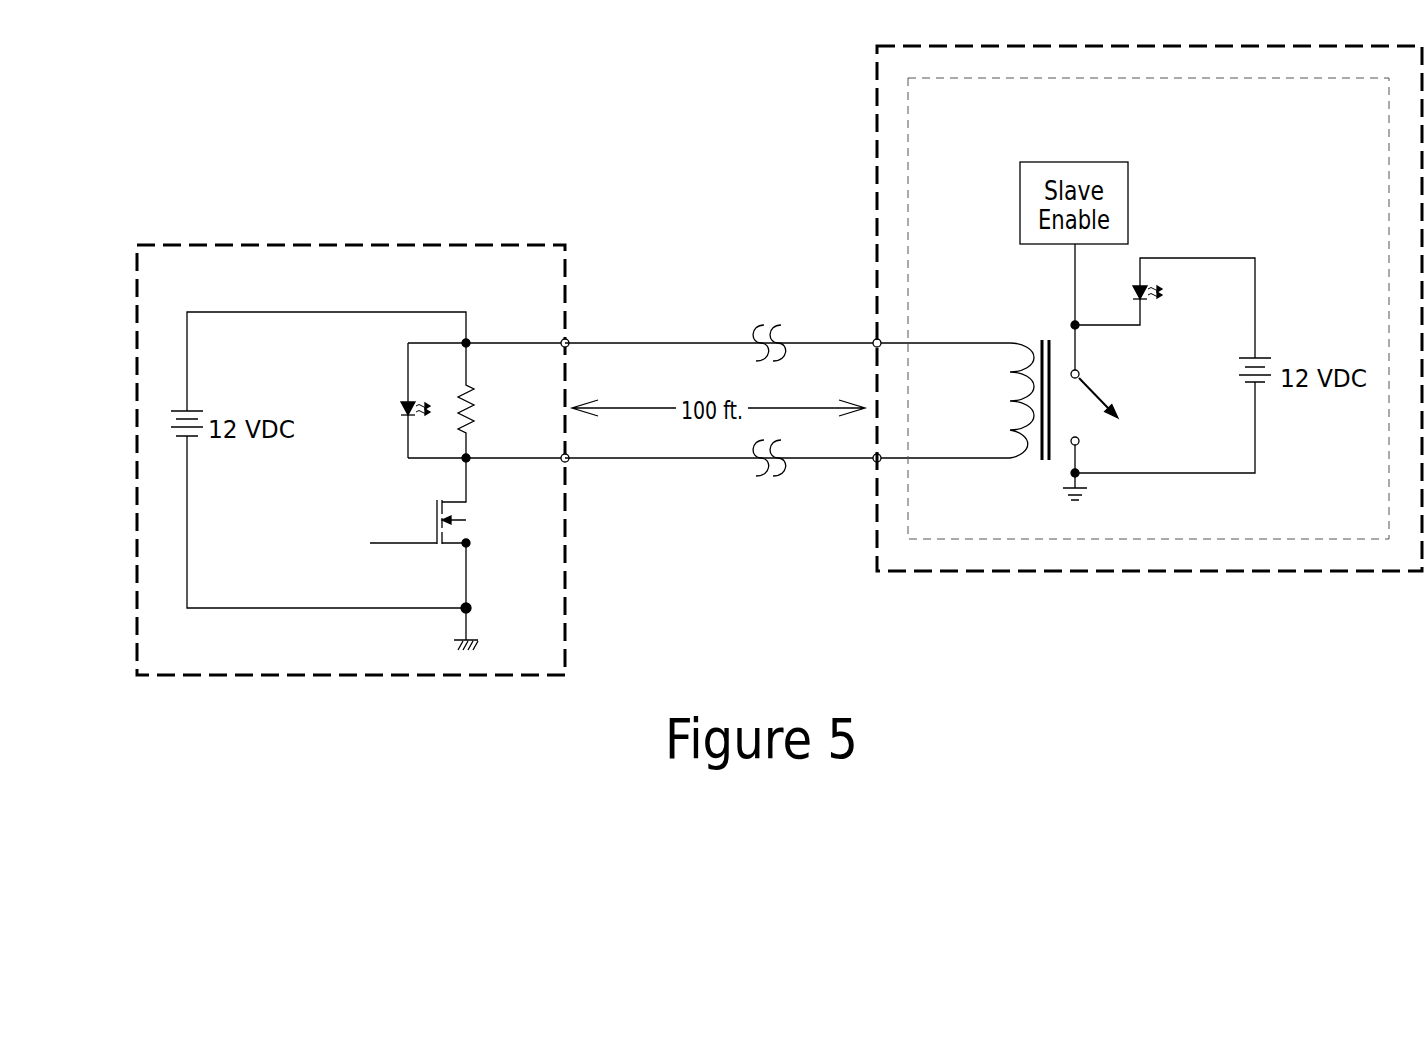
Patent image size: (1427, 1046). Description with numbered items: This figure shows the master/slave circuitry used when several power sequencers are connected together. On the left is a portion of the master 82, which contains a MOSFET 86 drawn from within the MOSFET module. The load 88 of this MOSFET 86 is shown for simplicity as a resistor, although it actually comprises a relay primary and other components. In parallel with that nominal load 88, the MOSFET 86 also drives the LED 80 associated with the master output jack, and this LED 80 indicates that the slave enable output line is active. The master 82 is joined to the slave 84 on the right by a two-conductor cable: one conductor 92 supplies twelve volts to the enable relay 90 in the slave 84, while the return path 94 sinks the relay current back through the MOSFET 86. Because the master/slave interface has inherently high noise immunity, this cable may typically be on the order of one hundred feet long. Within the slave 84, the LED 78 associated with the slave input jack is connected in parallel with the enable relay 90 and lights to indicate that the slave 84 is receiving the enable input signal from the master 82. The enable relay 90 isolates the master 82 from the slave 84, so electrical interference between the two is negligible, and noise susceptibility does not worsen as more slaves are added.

The LED 78 is at (1148, 283).
The LED 80 is at (403, 412).
The master 82 is at (302, 245).
The slave 84 is at (855, 78).
The MOSFET 86 is at (430, 507).
The load 88 is at (473, 390).
The enable relay 90 is at (1042, 458).
The conductor 92 is at (828, 343).
The return path 94 is at (828, 458).